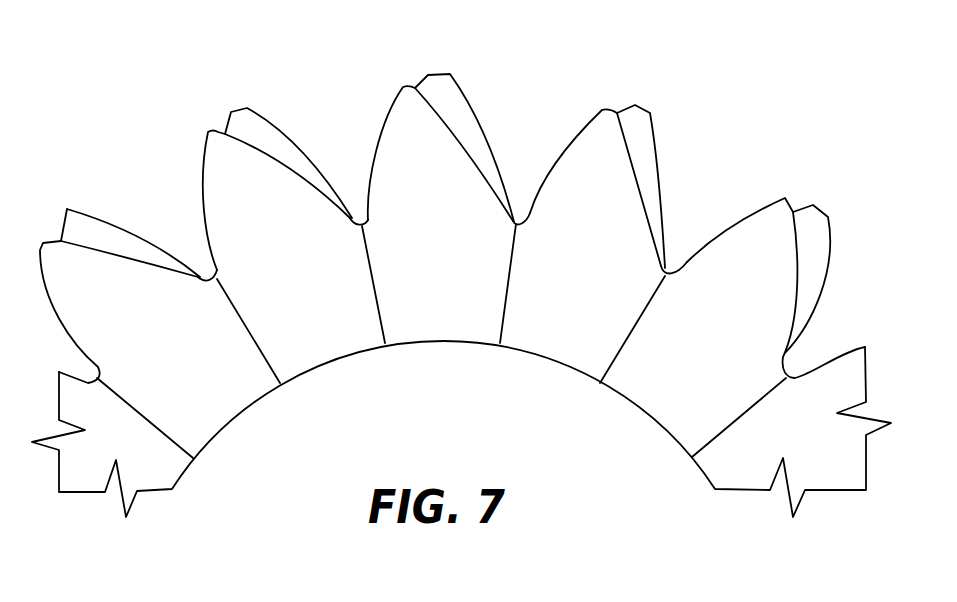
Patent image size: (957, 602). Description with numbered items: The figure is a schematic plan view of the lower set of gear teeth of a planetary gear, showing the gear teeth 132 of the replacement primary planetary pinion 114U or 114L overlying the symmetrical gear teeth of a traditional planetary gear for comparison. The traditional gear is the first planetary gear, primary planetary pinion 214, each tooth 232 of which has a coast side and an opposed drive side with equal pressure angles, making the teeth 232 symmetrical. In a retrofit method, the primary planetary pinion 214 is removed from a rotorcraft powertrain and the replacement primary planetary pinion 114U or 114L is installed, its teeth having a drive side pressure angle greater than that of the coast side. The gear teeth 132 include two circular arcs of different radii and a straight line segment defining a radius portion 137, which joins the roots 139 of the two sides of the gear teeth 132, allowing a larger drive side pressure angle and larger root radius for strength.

The replacement primary planetary pinion 114U is at (237, 144).
The replacement primary planetary pinion 114L is at (237, 144).
The gear teeth 132 is at (461, 268).
The radius portion 137 is at (533, 207).
The roots 139 is at (354, 184).
The primary planetary pinion 214 is at (315, 123).
The tooth 232 is at (236, 108).